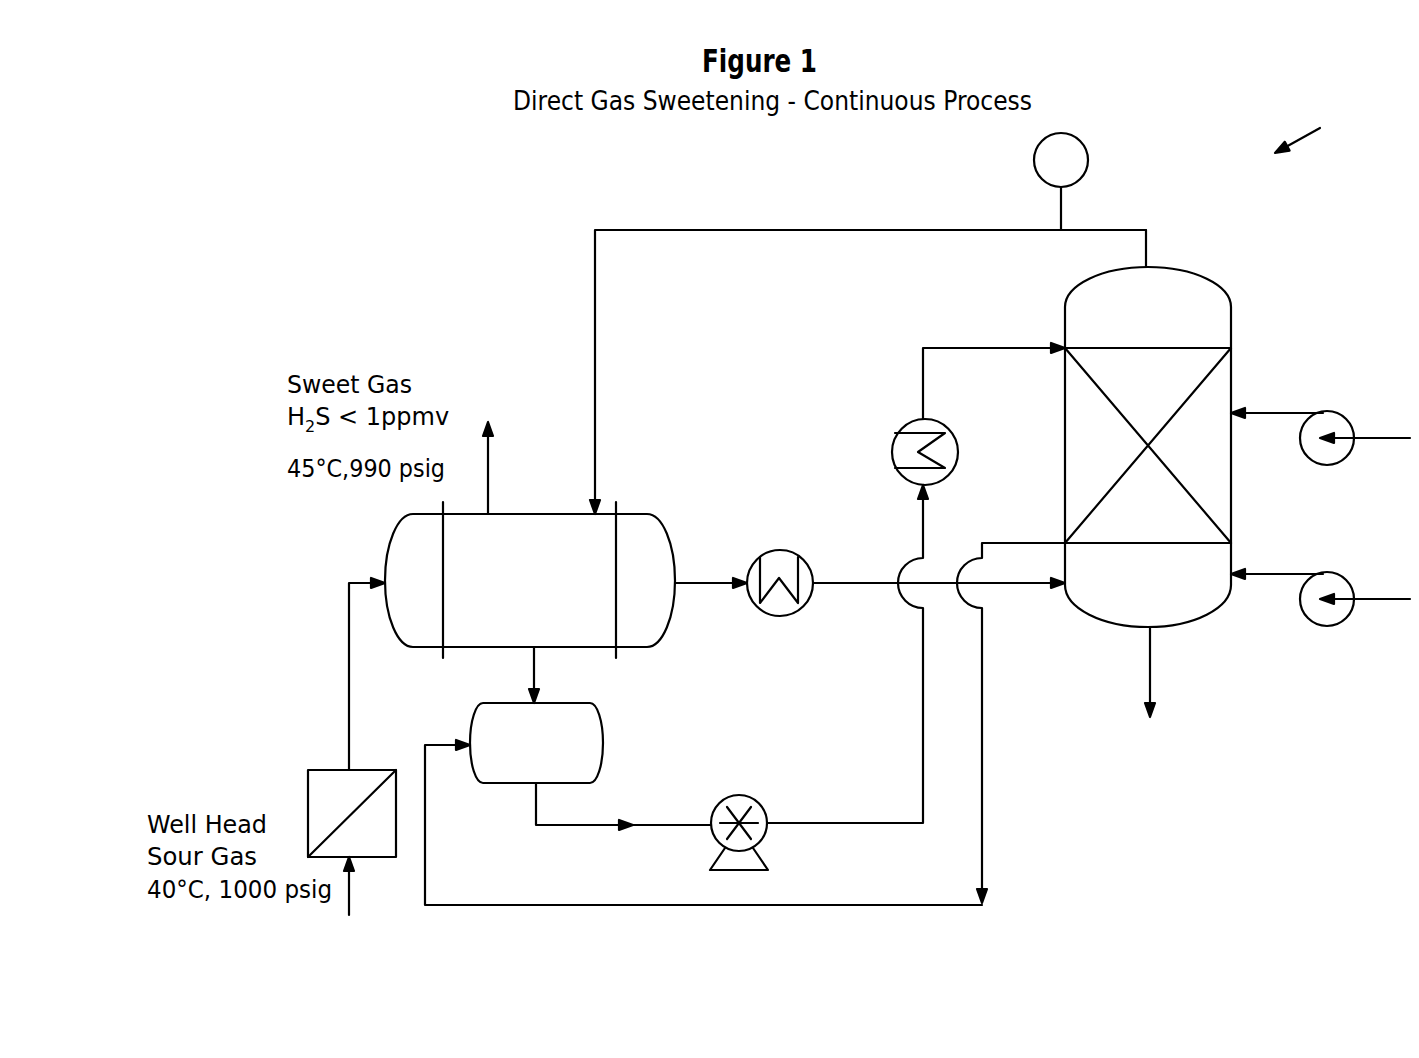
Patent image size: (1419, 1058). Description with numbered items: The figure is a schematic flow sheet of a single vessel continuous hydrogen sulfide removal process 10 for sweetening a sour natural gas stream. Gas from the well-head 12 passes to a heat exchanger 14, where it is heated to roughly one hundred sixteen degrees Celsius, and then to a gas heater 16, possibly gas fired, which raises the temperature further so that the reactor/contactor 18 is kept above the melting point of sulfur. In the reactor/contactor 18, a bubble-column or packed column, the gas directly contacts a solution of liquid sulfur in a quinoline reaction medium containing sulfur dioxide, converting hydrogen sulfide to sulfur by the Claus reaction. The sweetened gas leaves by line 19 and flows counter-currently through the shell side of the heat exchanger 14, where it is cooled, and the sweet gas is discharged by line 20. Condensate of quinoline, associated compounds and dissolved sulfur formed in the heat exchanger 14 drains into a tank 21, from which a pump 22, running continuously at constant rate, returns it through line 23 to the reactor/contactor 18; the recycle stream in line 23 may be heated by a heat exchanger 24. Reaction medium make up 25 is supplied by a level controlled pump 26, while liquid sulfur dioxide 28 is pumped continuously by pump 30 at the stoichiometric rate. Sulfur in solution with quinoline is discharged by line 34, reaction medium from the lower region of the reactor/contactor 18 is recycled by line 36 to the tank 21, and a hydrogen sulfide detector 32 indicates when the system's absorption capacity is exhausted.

The single vessel continuous hydrogen sulfide removal process 10 is at (1313, 126).
The well-head 12 is at (351, 880).
The heat exchanger 14 is at (485, 637).
The gas heater 16 is at (772, 617).
The reactor/contactor 18 is at (1234, 518).
The line 19 is at (598, 356).
The line 20 is at (490, 465).
The tank 21 is at (603, 733).
The pump 22 is at (712, 838).
The line 23 is at (925, 505).
The heat exchanger 24 is at (955, 430).
The reaction medium make up 25 is at (1392, 437).
The level controlled pump 26 is at (1325, 411).
The liquid sulfur dioxide 28 is at (1382, 602).
The pump 30 is at (1305, 620).
The hydrogen sulfide detector 32 is at (1089, 150).
The line 34 is at (1152, 677).
The line 36 is at (985, 832).